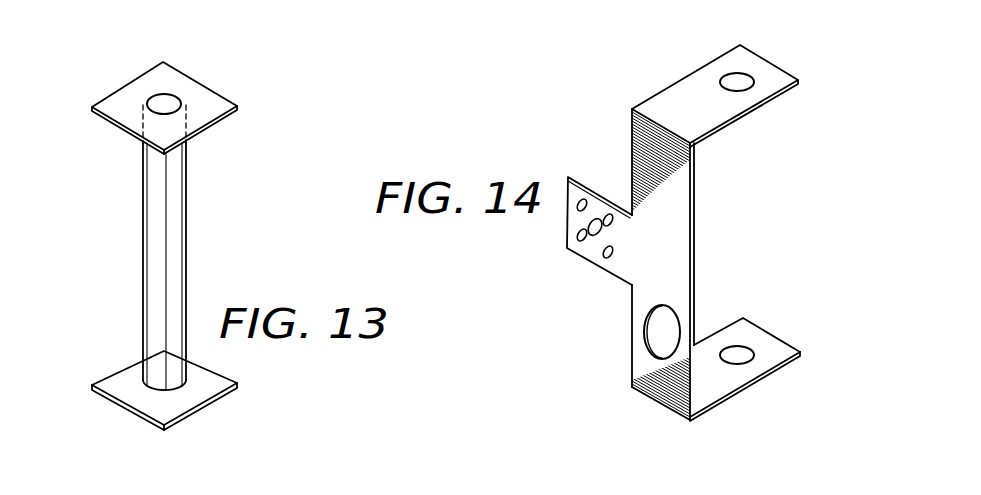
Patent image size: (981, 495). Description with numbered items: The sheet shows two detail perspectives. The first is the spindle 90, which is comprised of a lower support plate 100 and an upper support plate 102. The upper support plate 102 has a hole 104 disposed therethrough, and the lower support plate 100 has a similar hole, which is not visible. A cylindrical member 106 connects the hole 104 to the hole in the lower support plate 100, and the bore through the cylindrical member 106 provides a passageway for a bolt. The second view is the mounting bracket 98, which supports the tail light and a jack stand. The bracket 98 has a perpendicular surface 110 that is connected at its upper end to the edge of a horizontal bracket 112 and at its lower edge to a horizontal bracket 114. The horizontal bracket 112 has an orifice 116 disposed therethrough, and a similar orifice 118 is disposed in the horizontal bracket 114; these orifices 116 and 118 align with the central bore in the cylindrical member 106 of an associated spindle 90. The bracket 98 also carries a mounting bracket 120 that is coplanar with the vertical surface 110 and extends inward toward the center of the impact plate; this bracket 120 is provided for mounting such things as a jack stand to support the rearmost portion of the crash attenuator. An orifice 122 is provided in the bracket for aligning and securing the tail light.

In FIG. 13, the spindle 90 is at (225, 240).
In FIG. 13, the lower support plate 100 is at (117, 373).
In FIG. 13, the upper support plate 102 is at (118, 95).
In FIG. 13, the hole 104 is at (170, 98).
In FIG. 13, the cylindrical member 106 is at (150, 272).
In FIG. 14, the mounting bracket 98 is at (786, 203).
In FIG. 14, the perpendicular surface 110 is at (633, 155).
In FIG. 14, the horizontal bracket 112 is at (778, 97).
In FIG. 14, the horizontal bracket 114 is at (743, 389).
In FIG. 14, the orifice 116 is at (745, 78).
In FIG. 14, the orifice 118 is at (740, 352).
In FIG. 14, the mounting bracket 120 is at (583, 256).
In FIG. 14, the orifice 122 is at (650, 328).